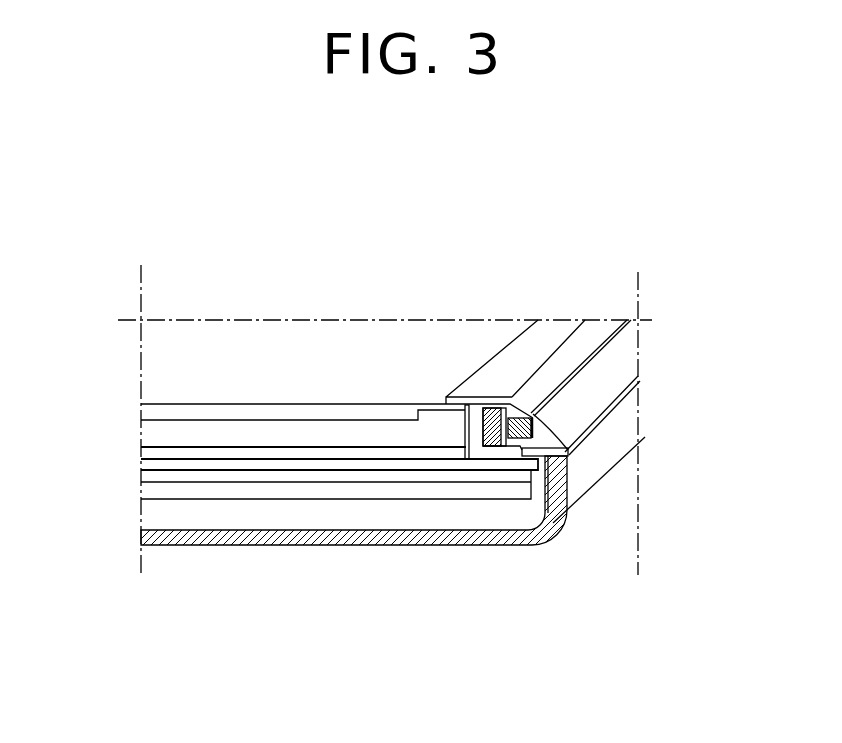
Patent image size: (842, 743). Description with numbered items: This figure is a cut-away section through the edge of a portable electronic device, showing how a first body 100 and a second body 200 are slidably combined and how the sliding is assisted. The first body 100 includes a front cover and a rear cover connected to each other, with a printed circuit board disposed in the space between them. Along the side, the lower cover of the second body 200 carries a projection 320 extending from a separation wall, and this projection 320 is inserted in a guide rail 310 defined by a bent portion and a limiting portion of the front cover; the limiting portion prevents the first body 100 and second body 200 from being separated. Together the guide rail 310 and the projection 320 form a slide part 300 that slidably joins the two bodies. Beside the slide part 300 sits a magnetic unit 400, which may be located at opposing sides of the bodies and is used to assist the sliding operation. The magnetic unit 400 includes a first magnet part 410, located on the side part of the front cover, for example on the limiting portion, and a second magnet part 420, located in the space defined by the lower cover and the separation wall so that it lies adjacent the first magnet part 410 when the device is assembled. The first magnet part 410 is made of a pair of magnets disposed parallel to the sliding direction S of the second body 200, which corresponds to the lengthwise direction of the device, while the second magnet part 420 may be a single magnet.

The first body 100 is at (126, 510).
The second body 200 is at (126, 430).
The slide part 300 is at (451, 491).
The guide rail 310 is at (565, 472).
The projection 320 is at (578, 493).
The magnetic unit 400 is at (622, 423).
The first magnet part 410 is at (534, 418).
The second magnet part 420 is at (568, 452).
The sliding direction S is at (729, 280).